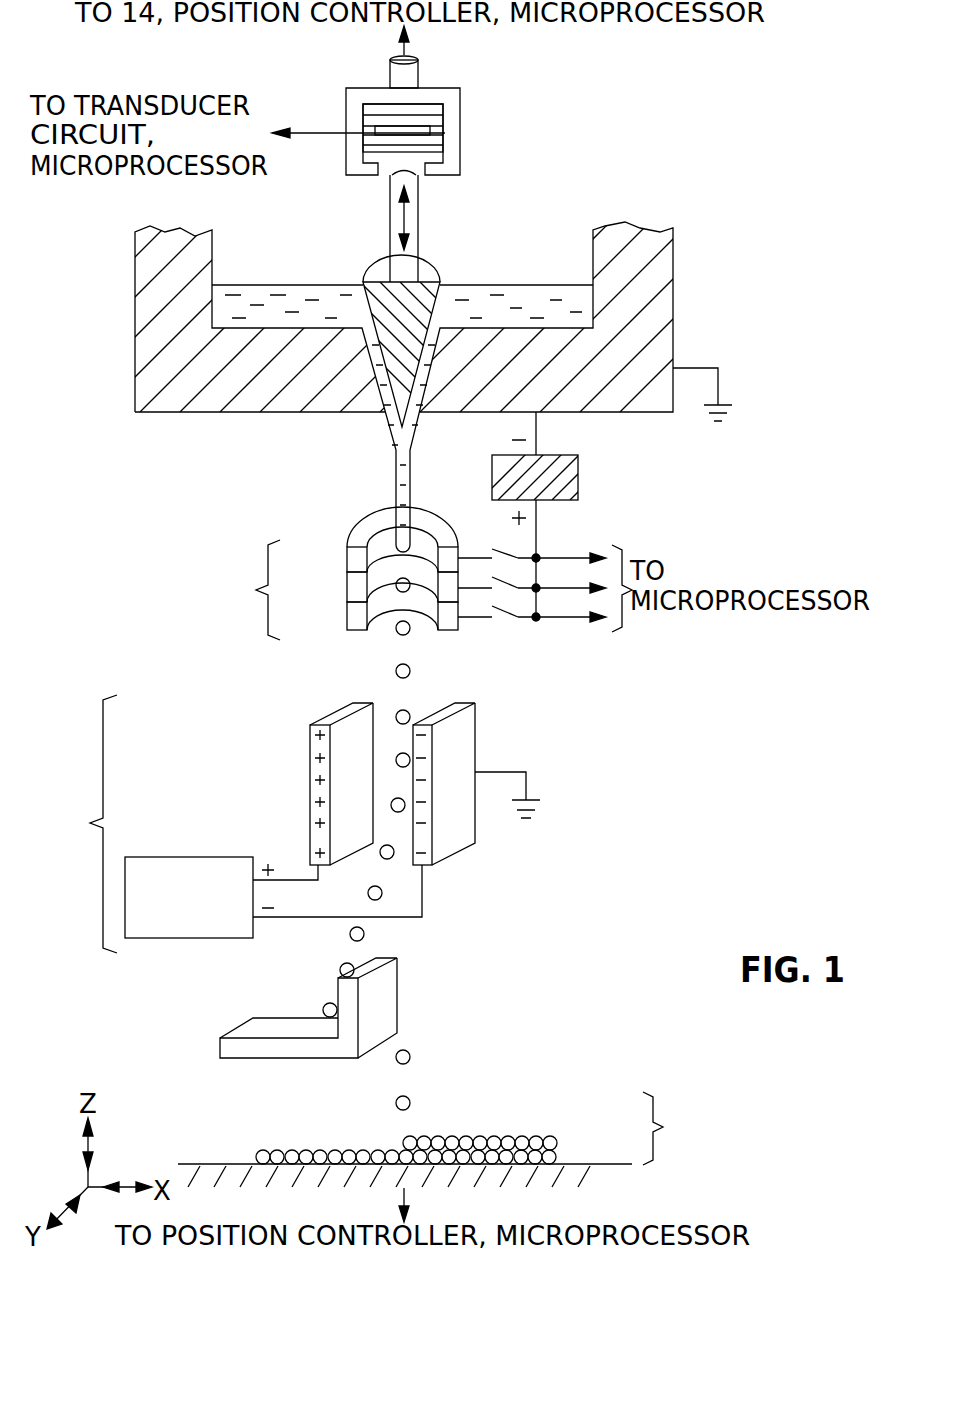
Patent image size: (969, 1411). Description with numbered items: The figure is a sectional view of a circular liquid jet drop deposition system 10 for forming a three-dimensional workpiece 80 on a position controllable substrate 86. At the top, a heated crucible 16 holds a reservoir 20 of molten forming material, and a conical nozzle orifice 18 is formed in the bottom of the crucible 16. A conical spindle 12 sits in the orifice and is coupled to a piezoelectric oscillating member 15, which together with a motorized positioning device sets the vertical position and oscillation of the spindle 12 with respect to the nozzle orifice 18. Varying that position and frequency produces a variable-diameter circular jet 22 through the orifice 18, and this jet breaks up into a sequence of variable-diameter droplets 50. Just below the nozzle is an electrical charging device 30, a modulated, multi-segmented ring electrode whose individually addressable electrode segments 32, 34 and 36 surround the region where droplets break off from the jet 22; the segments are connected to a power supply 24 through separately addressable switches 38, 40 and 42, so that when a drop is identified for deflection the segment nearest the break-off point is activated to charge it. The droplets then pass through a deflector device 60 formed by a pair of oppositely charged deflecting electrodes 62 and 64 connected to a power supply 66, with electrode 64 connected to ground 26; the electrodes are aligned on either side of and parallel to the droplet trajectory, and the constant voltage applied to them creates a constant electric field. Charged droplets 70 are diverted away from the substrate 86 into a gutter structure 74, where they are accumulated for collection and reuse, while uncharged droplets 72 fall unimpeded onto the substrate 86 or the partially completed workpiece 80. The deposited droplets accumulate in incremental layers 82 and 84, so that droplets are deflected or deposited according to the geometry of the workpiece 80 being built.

The circular liquid jet drop deposition system 10 is at (680, 131).
The conical spindle 12 is at (367, 268).
The piezoelectric oscillating member 15 is at (422, 135).
The heated crucible 16 is at (133, 310).
The conical nozzle orifice 18 is at (388, 410).
The reservoir of molten forming material 20 is at (510, 285).
The variable-diameter circular jet 22 is at (397, 492).
The power supply 24 is at (580, 472).
The ground 26 is at (722, 383).
The electrical charging device 30 is at (335, 573).
The electrode segment 32 is at (355, 563).
The electrode segment 34 is at (355, 590).
The electrode segment 36 is at (355, 617).
The switch 38 is at (538, 556).
The switch 40 is at (538, 590).
The switch 42 is at (538, 620).
The variable-diameter droplets 50 is at (398, 548).
The deflector device 60 is at (300, 824).
The deflecting electrode 62 is at (310, 768).
The deflecting electrode 64 is at (478, 735).
The power supply 66 is at (198, 857).
The charged droplets 70 is at (393, 856).
The uncharged droplets 72 is at (408, 1097).
The gutter structure 74 is at (220, 1045).
The workpiece 80 is at (482, 1128).
The incremental layer 82 is at (555, 1143).
The incremental layer 84 is at (555, 1157).
The position controllable substrate 86 is at (580, 1166).